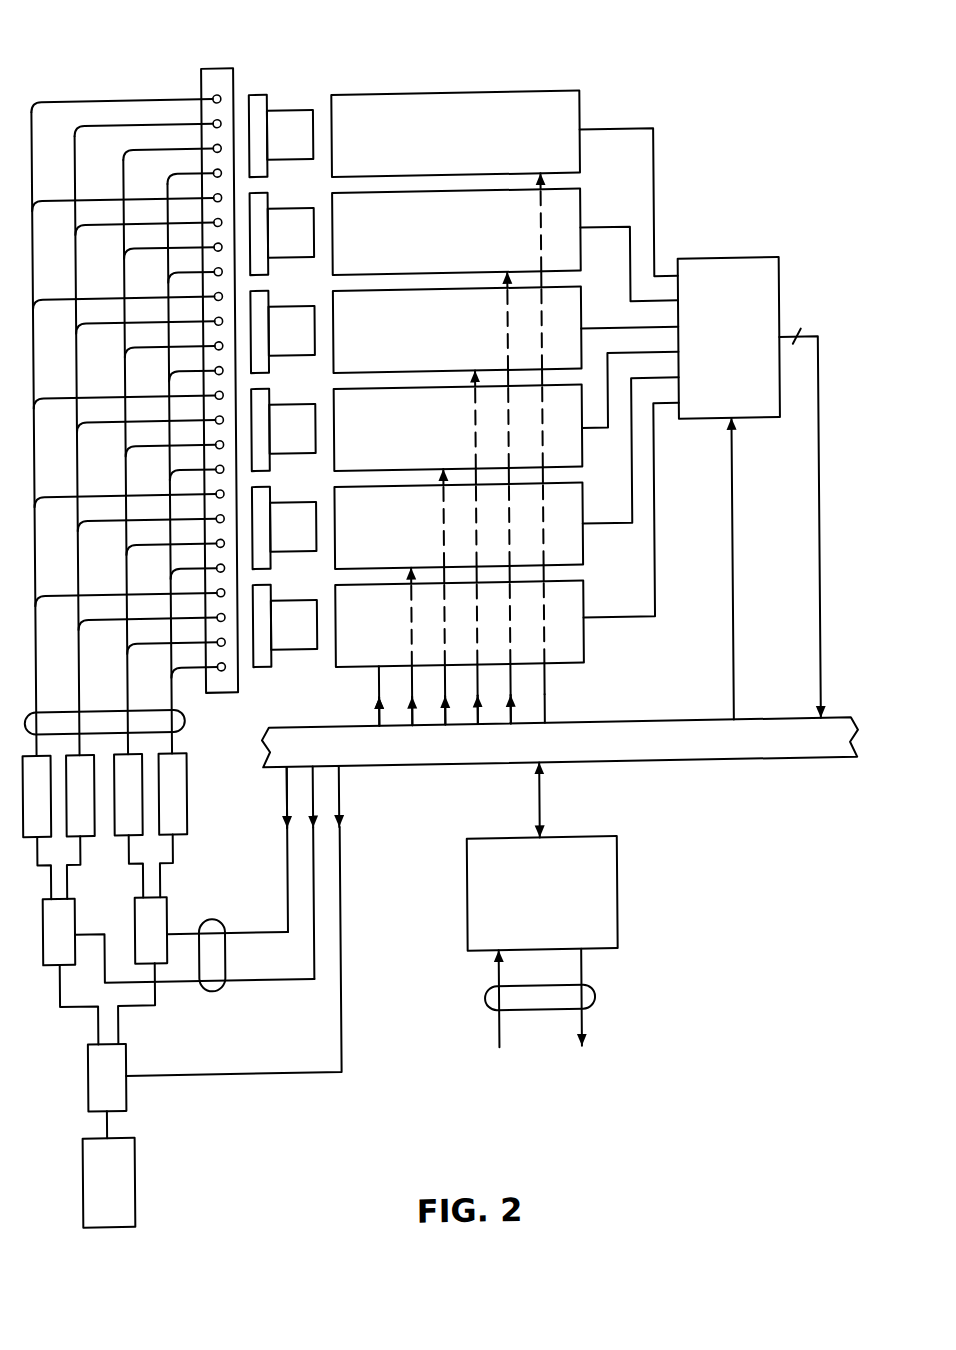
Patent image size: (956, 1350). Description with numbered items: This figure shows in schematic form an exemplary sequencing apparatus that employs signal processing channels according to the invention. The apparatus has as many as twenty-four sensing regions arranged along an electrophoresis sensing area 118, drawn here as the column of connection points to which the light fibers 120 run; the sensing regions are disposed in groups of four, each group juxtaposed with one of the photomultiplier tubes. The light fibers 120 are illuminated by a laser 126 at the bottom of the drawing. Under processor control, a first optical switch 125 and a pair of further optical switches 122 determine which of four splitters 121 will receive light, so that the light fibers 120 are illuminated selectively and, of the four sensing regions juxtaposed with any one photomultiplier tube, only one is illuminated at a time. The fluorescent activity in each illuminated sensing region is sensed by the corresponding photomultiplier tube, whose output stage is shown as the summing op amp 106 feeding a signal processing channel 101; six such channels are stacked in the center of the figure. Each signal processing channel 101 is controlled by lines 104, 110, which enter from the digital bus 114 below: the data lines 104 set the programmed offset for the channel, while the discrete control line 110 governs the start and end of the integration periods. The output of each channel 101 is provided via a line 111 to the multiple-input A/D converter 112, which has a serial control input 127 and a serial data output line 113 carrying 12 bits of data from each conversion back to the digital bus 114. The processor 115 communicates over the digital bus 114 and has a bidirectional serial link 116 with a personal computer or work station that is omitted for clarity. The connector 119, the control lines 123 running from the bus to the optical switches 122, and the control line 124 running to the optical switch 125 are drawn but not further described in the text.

The signal processing channel 101 is at (431, 103).
The data lines 104 is at (523, 448).
The discrete control line 110 is at (539, 694).
The op amp 106 is at (286, 115).
The line 111 is at (665, 287).
The A/D converter 112 is at (731, 271).
The bits of data 12 is at (801, 320).
The serial data line 113 is at (782, 508).
The digital bus 114 is at (706, 773).
The processor 115 is at (610, 905).
The bidirectional serial link 116 is at (587, 1004).
The electrophoresis sensing area 118 is at (248, 66).
The connector 119 is at (212, 72).
The light fibers 120 is at (179, 721).
The splitters 121 is at (184, 804).
The optical switches 122 is at (68, 904).
The control lines 123 is at (210, 994).
The control line 124 is at (256, 1078).
The optical switch 125 is at (117, 1094).
The laser 126 is at (126, 1187).
The serial control line 127 is at (728, 561).